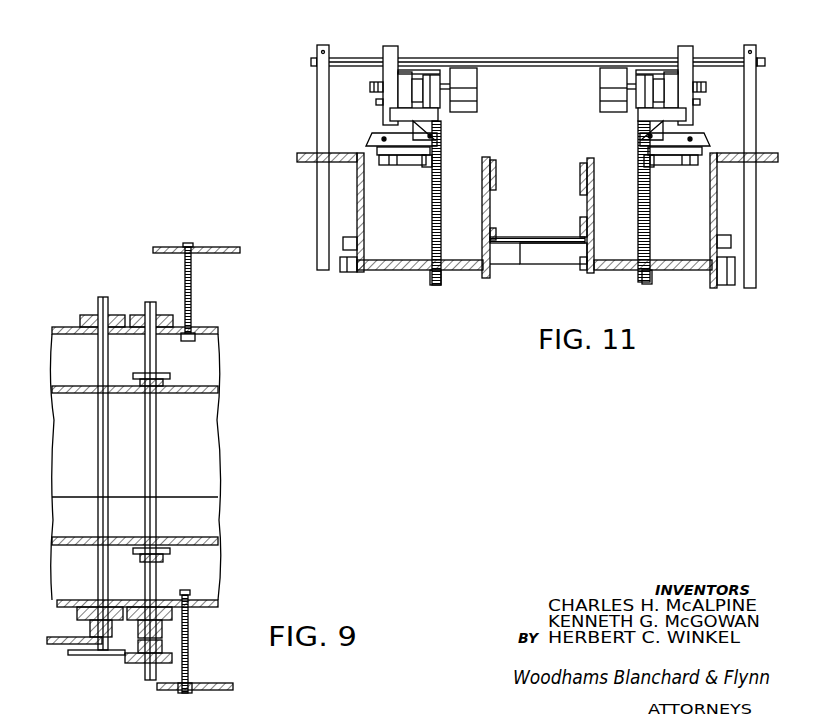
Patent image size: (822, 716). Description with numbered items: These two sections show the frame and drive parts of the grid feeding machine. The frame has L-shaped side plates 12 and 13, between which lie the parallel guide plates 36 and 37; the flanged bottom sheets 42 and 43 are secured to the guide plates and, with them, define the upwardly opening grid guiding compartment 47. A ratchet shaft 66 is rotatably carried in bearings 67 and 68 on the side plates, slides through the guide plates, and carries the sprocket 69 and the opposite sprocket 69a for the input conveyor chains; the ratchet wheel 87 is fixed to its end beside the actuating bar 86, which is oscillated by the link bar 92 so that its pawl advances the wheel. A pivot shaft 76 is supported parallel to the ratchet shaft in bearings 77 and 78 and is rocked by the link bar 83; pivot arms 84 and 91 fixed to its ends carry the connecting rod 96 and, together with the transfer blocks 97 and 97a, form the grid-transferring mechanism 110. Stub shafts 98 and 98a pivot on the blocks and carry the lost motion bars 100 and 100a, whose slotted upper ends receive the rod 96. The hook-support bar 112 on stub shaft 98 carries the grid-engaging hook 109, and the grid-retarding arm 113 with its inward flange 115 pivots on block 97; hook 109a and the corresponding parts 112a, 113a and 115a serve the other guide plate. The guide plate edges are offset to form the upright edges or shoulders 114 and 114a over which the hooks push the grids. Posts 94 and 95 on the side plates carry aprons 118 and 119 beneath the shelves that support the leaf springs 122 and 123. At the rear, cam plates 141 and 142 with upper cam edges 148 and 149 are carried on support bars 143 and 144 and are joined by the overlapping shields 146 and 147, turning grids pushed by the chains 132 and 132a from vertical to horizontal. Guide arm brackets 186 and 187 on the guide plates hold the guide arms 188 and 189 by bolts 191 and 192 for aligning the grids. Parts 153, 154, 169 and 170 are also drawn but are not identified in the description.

In FIG. 11, the grid-transferring mechanism 110 is at (298, 37).
In FIG. 11, the connecting rod 96 is at (548, 60).
In FIG. 11, the pivot arm 91 is at (318, 83).
In FIG. 11, the pivot arm 84 is at (756, 90).
In FIG. 11, the lost motion bar 100 is at (383, 60).
In FIG. 11, the grid transfer block 97 is at (405, 75).
In FIG. 11, the hook-support bar 112 is at (428, 78).
In FIG. 11, the grid-engaging hook 109 is at (432, 72).
In FIG. 11, the leaf spring 123 is at (470, 103).
In FIG. 11, the stub shaft 98 is at (370, 87).
In FIG. 11, the grid-retarding arm 113 is at (400, 113).
In FIG. 11, the inwardly extending flange 115 is at (434, 113).
In FIG. 11, the guide plate 37 is at (442, 230).
In FIG. 9, the guide plate 37 is at (218, 388).
In FIG. 11, the upright edge 114 is at (441, 137).
In FIG. 11, the bolt 192 is at (372, 138).
In FIG. 11, the guide arm 189 is at (402, 132).
In FIG. 11, the guide arm bracket 187 is at (390, 162).
In FIG. 11, the plate 170 is at (297, 158).
In FIG. 11, the side plate 13 is at (357, 190).
In FIG. 9, the side plate 13 is at (57, 328).
In FIG. 11, the support bar 144 is at (470, 271).
In FIG. 11, the chain 132 is at (430, 282).
In FIG. 11, the upper cam edge 149 is at (483, 156).
In FIG. 11, the cam plate 142 is at (494, 172).
In FIG. 11, the spacer 154 is at (497, 190).
In FIG. 11, the shield 147 is at (512, 237).
In FIG. 11, the shield 146 is at (545, 264).
In FIG. 11, the upper cam edge 148 is at (587, 160).
In FIG. 11, the cam plate 141 is at (587, 161).
In FIG. 11, the spacer 153 is at (580, 180).
In FIG. 11, the support bar 143 is at (590, 272).
In FIG. 11, the guide plate 36 is at (638, 212).
In FIG. 9, the guide plate 36 is at (205, 540).
In FIG. 11, the grid guiding compartment 47 is at (644, 282).
In FIG. 9, the grid guiding compartment 47 is at (65, 392).
In FIG. 11, the chain 132a is at (652, 282).
In FIG. 11, the side plate 12 is at (715, 190).
In FIG. 9, the side plate 12 is at (62, 602).
In FIG. 11, the plate 169 is at (772, 165).
In FIG. 11, the lost motion bar 100a is at (692, 60).
In FIG. 11, the grid transfer block 97a is at (672, 80).
In FIG. 11, the block 112a is at (655, 80).
In FIG. 11, the grid-engaging hook 109a is at (645, 74).
In FIG. 11, the leaf spring 122 is at (615, 105).
In FIG. 11, the stub shaft 98a is at (706, 87).
In FIG. 11, the horizontal member 113a is at (686, 113).
In FIG. 11, the gusset 115a is at (645, 113).
In FIG. 11, the upright edge 114a is at (650, 137).
In FIG. 11, the bolt 191 is at (692, 137).
In FIG. 11, the guide arm 188 is at (707, 140).
In FIG. 11, the guide arm bracket 186 is at (682, 162).
In FIG. 9, the apron 119 is at (213, 247).
In FIG. 9, the post 95 is at (194, 293).
In FIG. 9, the flanged bottom sheet 43 is at (210, 445).
In FIG. 9, the bearing 78 is at (85, 315).
In FIG. 9, the bearing 68 is at (135, 315).
In FIG. 9, the pivot shaft 76 is at (104, 430).
In FIG. 9, the ratchet shaft 66 is at (150, 440).
In FIG. 9, the sprocket 69 is at (170, 378).
In FIG. 9, the flanged bottom sheet 42 is at (200, 513).
In FIG. 9, the sprocket 69a is at (168, 553).
In FIG. 9, the bearing 77 is at (80, 608).
In FIG. 9, the bearing 67 is at (130, 608).
In FIG. 9, the link bar 83 is at (52, 638).
In FIG. 9, the post 94 is at (188, 636).
In FIG. 9, the actuating bar 86 is at (128, 648).
In FIG. 9, the link bar 92 is at (80, 655).
In FIG. 9, the ratchet wheel 87 is at (130, 665).
In FIG. 9, the apron 118 is at (225, 683).